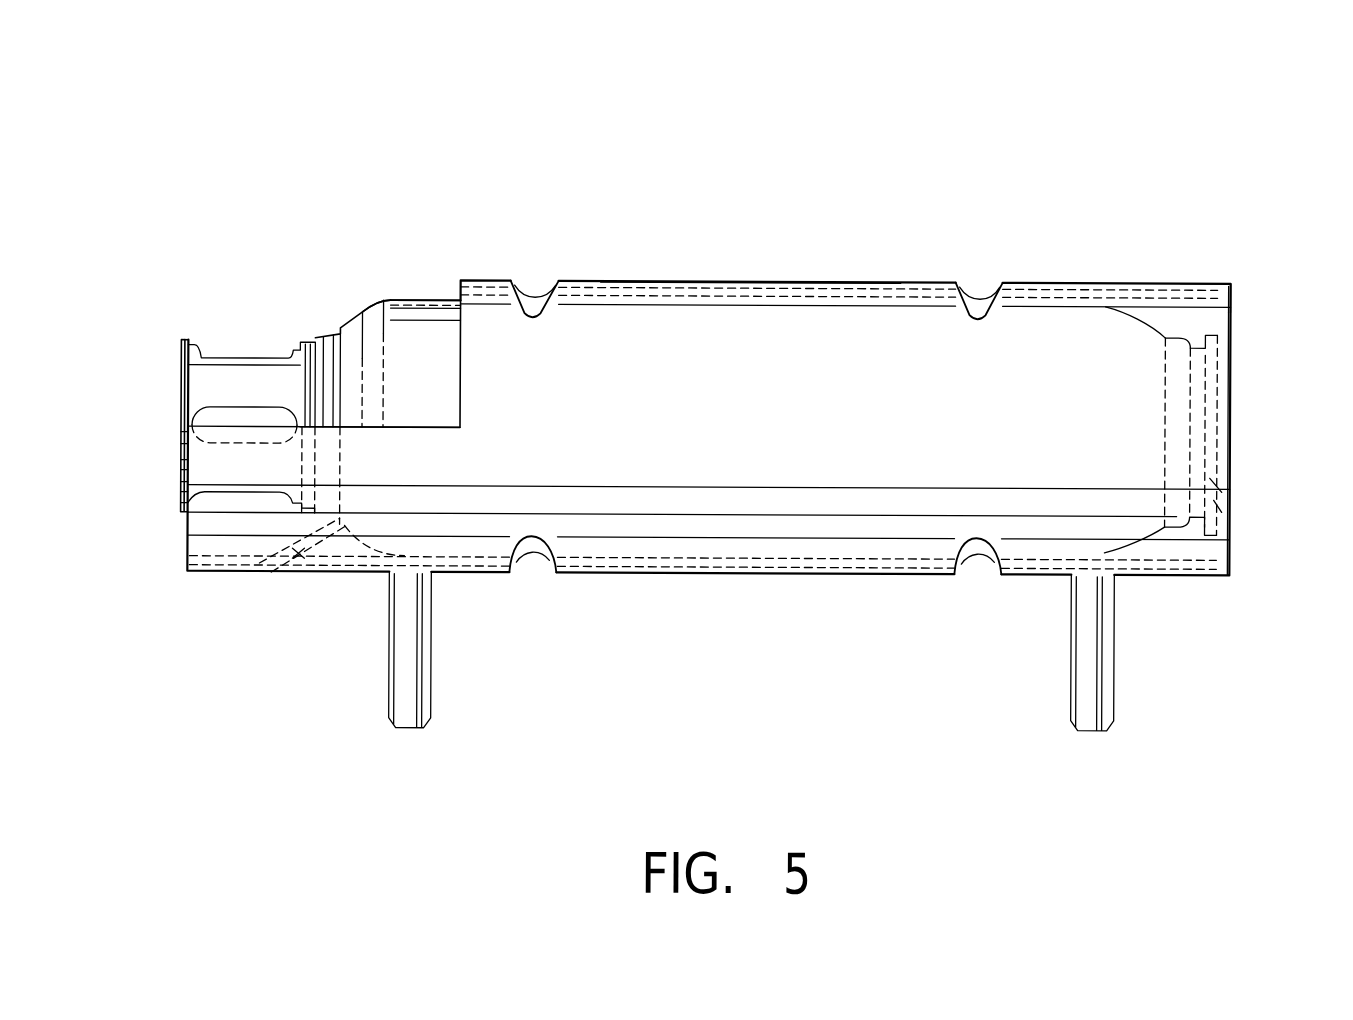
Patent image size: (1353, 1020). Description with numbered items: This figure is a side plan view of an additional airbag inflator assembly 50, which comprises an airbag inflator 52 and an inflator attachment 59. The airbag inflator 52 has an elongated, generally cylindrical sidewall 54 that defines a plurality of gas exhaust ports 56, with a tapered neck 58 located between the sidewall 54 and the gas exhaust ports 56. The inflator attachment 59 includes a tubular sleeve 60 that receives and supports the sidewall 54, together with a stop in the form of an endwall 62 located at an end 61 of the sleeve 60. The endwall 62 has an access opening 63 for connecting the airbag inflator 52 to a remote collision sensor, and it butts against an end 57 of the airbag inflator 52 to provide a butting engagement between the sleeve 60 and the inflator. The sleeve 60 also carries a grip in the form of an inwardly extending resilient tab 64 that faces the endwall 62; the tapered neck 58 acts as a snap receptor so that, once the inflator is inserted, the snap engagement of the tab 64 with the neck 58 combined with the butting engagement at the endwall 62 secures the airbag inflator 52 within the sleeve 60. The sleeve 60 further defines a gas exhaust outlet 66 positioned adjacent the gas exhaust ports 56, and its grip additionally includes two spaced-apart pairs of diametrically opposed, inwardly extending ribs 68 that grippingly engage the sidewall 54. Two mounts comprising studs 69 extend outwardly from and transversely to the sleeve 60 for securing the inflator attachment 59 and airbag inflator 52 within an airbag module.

The inflator assembly 50 is at (805, 113).
The airbag inflator 52 is at (437, 297).
The sidewall 54 is at (395, 298).
The gas exhaust ports 56 is at (243, 361).
The end of the airbag inflator 57 is at (1232, 572).
The tapered neck 58 is at (362, 314).
The inflator attachment 59 is at (695, 281).
The tubular sleeve 60 is at (822, 282).
The end of the sleeve 61 is at (1208, 283).
The endwall 62 is at (1232, 357).
The access opening 63 is at (1240, 478).
The resilient tab 64 is at (307, 577).
The gas exhaust outlet 66 is at (212, 419).
The ribs 68 is at (533, 321).
The studs 69 is at (423, 674).